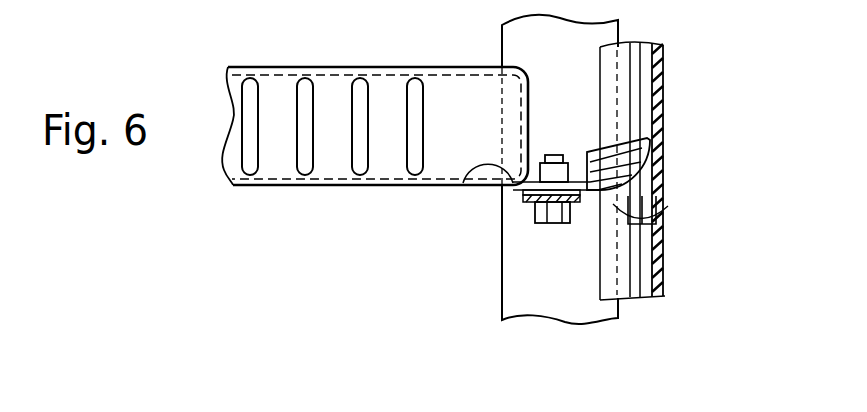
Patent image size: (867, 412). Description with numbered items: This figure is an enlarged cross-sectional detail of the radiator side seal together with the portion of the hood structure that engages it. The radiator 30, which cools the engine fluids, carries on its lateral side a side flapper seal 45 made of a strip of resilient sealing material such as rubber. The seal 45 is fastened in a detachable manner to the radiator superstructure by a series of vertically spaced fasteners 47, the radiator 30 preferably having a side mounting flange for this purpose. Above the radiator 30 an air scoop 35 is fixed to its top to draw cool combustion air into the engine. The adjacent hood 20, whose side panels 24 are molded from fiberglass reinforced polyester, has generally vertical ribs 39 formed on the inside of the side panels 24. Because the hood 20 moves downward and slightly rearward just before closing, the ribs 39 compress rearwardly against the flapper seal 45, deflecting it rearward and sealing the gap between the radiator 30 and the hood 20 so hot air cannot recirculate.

The hood 20 is at (668, 293).
The side panels 24 is at (665, 95).
The radiator 30 is at (287, 142).
The air scoop 35 is at (463, 183).
The ribs 39 is at (650, 220).
The side flapper seal 45 is at (642, 128).
The fasteners 47 is at (550, 222).